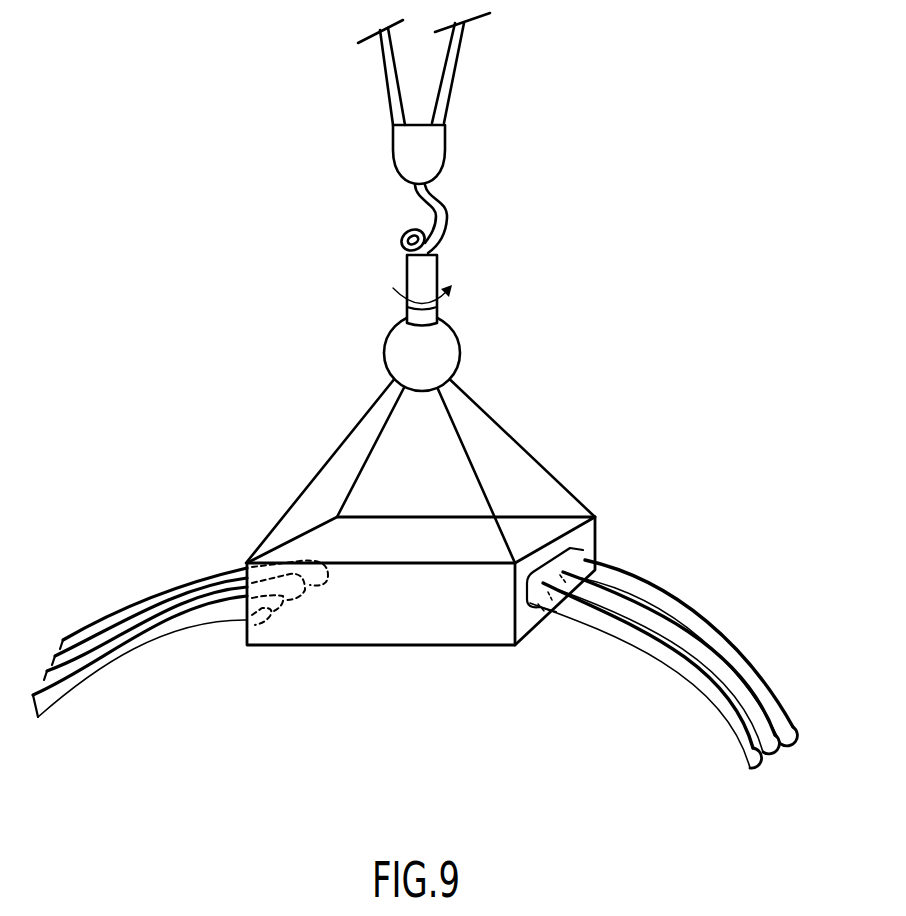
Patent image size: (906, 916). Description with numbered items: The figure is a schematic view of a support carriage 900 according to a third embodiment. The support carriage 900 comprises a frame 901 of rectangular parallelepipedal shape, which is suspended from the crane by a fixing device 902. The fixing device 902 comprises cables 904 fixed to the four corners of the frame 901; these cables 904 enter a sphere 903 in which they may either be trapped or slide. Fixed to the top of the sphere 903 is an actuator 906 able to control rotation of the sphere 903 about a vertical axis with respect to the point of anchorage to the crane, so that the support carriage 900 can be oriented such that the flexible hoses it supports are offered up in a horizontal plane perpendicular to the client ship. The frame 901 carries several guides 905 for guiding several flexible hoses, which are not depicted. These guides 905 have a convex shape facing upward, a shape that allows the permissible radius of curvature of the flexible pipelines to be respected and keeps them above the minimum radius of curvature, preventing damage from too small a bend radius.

The support carriage 900 is at (415, 390).
The frame 901 is at (421, 656).
The fixing device 902 is at (438, 433).
The sphere 903 is at (383, 350).
The cables 904 is at (342, 442).
The guides 905 is at (182, 602).
The actuator 906 is at (437, 272).